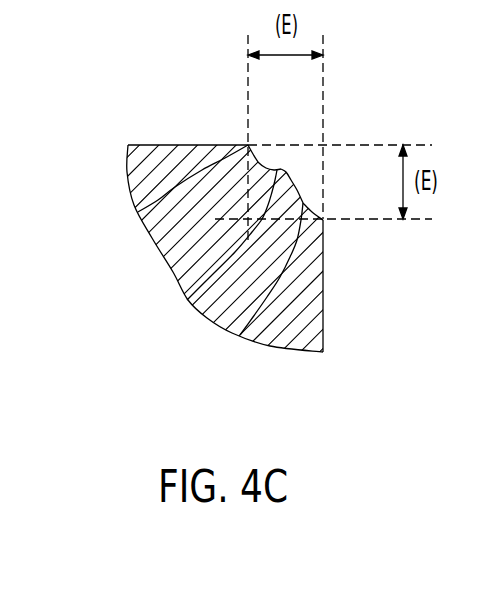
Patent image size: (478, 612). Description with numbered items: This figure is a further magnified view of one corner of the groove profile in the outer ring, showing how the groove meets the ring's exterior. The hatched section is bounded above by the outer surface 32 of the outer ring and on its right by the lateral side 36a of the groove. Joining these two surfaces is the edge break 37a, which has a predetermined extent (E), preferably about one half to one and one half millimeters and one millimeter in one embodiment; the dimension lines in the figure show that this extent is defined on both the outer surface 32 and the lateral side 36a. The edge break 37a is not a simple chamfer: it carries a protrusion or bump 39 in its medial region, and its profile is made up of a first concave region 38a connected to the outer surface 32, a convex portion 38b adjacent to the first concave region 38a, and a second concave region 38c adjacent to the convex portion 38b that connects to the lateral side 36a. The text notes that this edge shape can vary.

The outer surface 32 is at (180, 143).
The lateral side 36a is at (323, 292).
The edge break 37a is at (261, 165).
The protrusion or bump 39 is at (283, 168).
The first concave region 38a is at (138, 212).
The convex portion 38b is at (187, 300).
The second concave region 38c is at (240, 335).